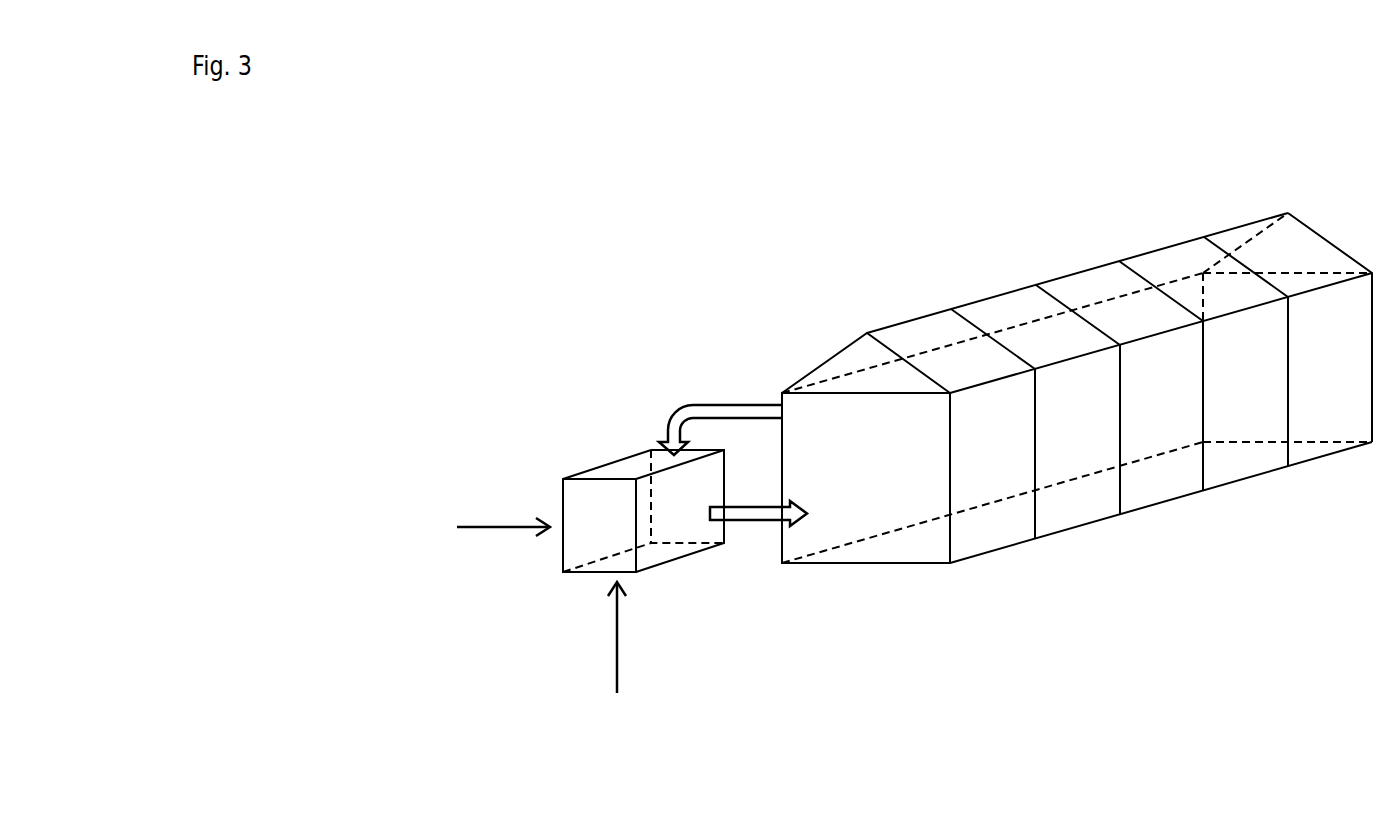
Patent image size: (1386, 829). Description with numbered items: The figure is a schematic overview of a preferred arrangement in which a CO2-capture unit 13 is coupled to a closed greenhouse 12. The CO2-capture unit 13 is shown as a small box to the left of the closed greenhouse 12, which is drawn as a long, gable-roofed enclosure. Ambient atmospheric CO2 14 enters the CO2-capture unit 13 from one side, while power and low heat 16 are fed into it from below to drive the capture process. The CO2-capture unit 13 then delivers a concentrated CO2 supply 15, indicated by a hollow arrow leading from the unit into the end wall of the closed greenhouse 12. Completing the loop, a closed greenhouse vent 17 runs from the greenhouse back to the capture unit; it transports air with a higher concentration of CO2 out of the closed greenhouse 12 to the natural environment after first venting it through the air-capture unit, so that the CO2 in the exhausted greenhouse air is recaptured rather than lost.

The closed greenhouse 12 is at (1072, 260).
The CO2-capture unit 13 is at (602, 455).
The ambient atmospheric CO2 14 is at (477, 527).
The concentrated CO2 supply 15 is at (748, 525).
The power and low heat 16 is at (617, 664).
The closed greenhouse vent 17 is at (733, 397).